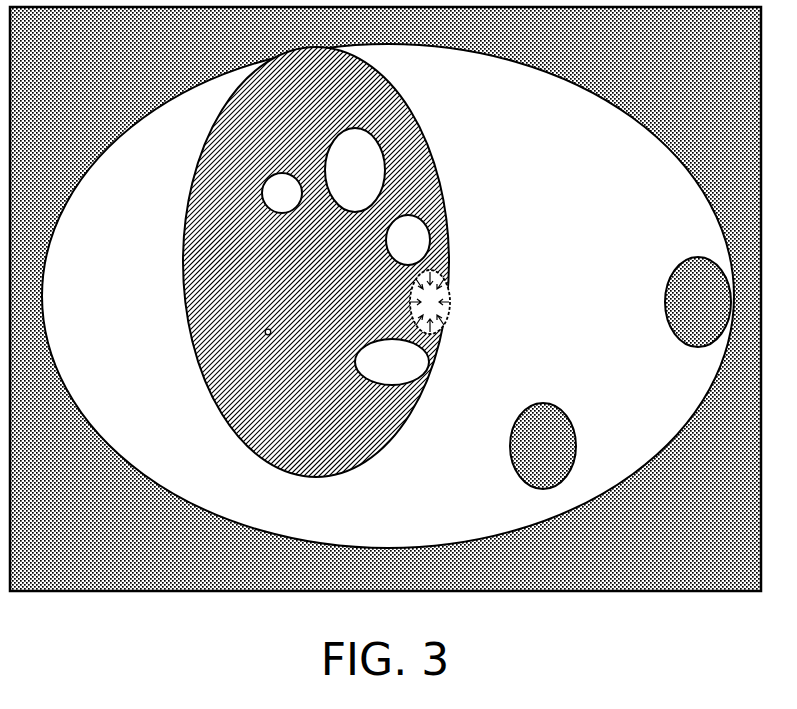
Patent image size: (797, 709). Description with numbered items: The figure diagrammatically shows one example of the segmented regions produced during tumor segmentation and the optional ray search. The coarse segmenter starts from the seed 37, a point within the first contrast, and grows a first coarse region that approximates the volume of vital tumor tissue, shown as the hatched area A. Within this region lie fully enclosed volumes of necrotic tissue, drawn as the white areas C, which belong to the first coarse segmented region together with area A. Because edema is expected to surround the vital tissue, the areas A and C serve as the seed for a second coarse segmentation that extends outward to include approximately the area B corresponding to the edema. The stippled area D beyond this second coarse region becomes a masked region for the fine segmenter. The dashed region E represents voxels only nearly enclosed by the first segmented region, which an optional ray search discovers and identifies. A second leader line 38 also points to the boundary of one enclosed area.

The seed 37 is at (264, 332).
The boundary of region C 38 is at (263, 203).
The vital tissue area A is at (398, 275).
The edema area B is at (388, 296).
The enclosed necrotic tissue area C is at (377, 256).
The masked region D is at (398, 299).
The nearly enclosed region E is at (430, 302).